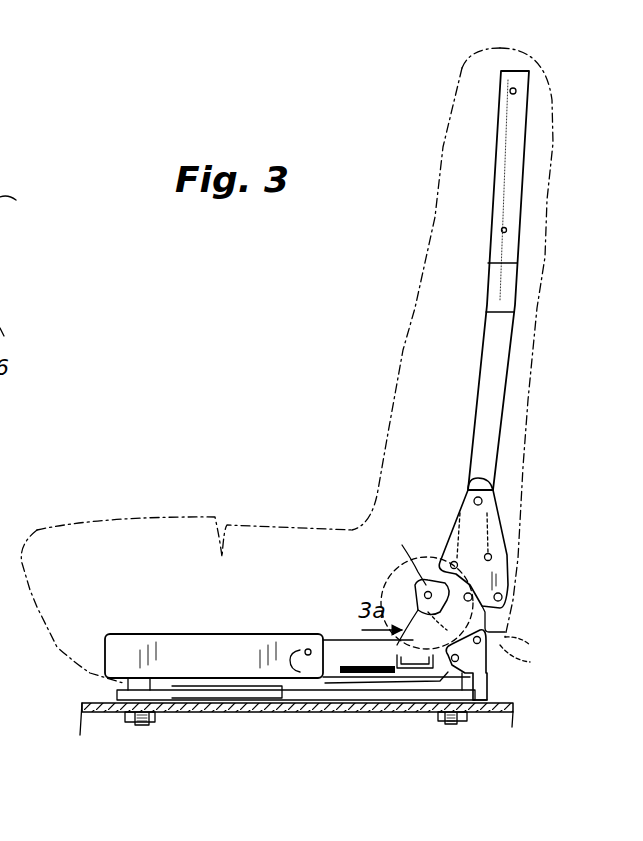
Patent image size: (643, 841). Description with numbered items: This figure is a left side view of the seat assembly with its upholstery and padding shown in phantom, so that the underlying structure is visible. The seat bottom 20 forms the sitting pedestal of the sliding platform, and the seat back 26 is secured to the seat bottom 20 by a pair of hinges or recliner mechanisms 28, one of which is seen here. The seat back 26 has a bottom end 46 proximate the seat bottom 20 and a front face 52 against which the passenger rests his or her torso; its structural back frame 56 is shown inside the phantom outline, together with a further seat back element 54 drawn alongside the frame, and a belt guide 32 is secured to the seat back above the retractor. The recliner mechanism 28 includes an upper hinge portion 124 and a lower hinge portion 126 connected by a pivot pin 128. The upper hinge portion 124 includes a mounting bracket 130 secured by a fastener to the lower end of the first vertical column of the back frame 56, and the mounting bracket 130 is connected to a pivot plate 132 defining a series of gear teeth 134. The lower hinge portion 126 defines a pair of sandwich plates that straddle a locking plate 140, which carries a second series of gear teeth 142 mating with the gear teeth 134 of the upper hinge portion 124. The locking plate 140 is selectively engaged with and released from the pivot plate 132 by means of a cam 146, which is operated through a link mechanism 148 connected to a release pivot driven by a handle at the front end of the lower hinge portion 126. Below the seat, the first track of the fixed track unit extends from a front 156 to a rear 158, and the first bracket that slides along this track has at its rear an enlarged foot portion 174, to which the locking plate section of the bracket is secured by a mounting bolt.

The seat bottom 20 is at (132, 510).
The seat back 26 is at (545, 222).
The recliner mechanism 28 is at (492, 672).
The belt guide 32 is at (23, 205).
The bottom end 46 is at (505, 645).
The front face 52 is at (433, 217).
The seat back frame member 54 is at (535, 333).
The back frame 56 is at (506, 405).
The upper hinge portion 124 is at (504, 533).
The lower hinge portion 126 is at (339, 632).
The pivot pin 128 is at (503, 604).
The mounting bracket 130 is at (496, 508).
The pivot plate 132 is at (512, 581).
The gear teeth 134 is at (505, 622).
The locking plate 140 is at (390, 584).
The second series of gear teeth 142 is at (427, 555).
The cam 146 is at (368, 676).
The link mechanism 148 is at (327, 679).
The front 156 is at (113, 703).
The rear 158 is at (477, 700).
The foot portion 174 is at (447, 665).